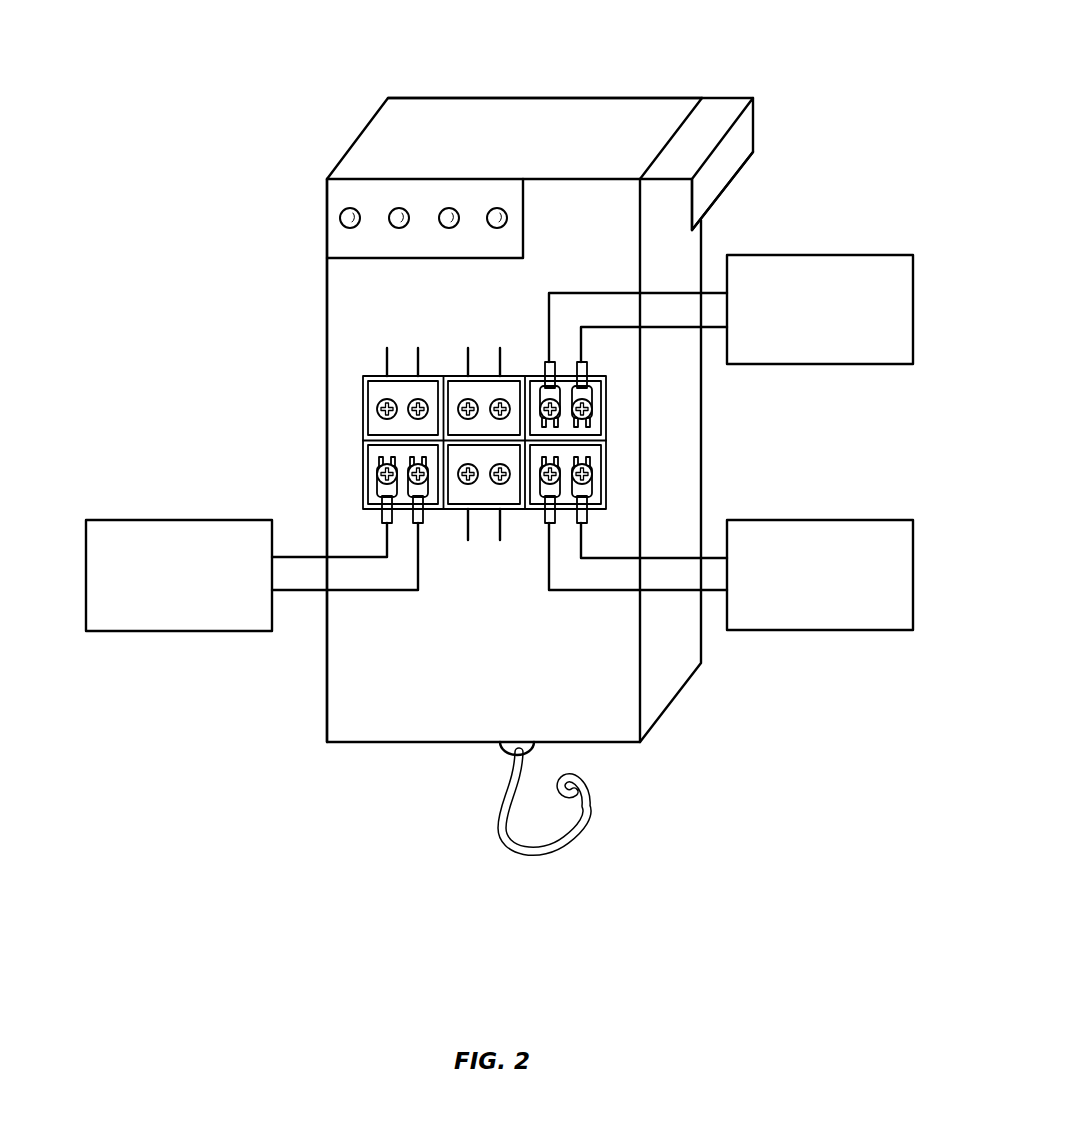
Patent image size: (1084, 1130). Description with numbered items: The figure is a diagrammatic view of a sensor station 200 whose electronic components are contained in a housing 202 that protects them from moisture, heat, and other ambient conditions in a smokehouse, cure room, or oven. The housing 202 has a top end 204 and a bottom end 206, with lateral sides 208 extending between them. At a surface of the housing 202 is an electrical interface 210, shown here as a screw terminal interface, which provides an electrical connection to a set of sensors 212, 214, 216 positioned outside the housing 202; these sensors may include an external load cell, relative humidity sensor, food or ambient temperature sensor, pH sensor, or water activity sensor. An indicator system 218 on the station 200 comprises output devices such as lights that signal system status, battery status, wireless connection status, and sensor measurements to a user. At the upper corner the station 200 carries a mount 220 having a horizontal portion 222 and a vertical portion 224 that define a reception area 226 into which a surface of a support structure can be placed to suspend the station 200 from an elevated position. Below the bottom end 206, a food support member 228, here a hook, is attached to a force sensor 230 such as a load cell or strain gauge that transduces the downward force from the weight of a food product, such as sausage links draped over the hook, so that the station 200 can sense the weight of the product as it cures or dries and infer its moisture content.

The sensor station 200 is at (317, 125).
The housing 202 is at (512, 96).
The top end 204 is at (658, 113).
The bottom end 206 is at (616, 744).
The lateral sides 208 is at (334, 678).
The electrical interface 210 is at (345, 443).
The sensor 212 is at (731, 309).
The sensor 214 is at (731, 575).
The sensor 216 is at (252, 575).
The indicator system 218 is at (345, 207).
The mount 220 is at (738, 135).
The horizontal portion 222 is at (720, 108).
The vertical portion 224 is at (725, 162).
The reception area 226 is at (663, 200).
The food support member 228 is at (520, 856).
The force sensor 230 is at (498, 747).